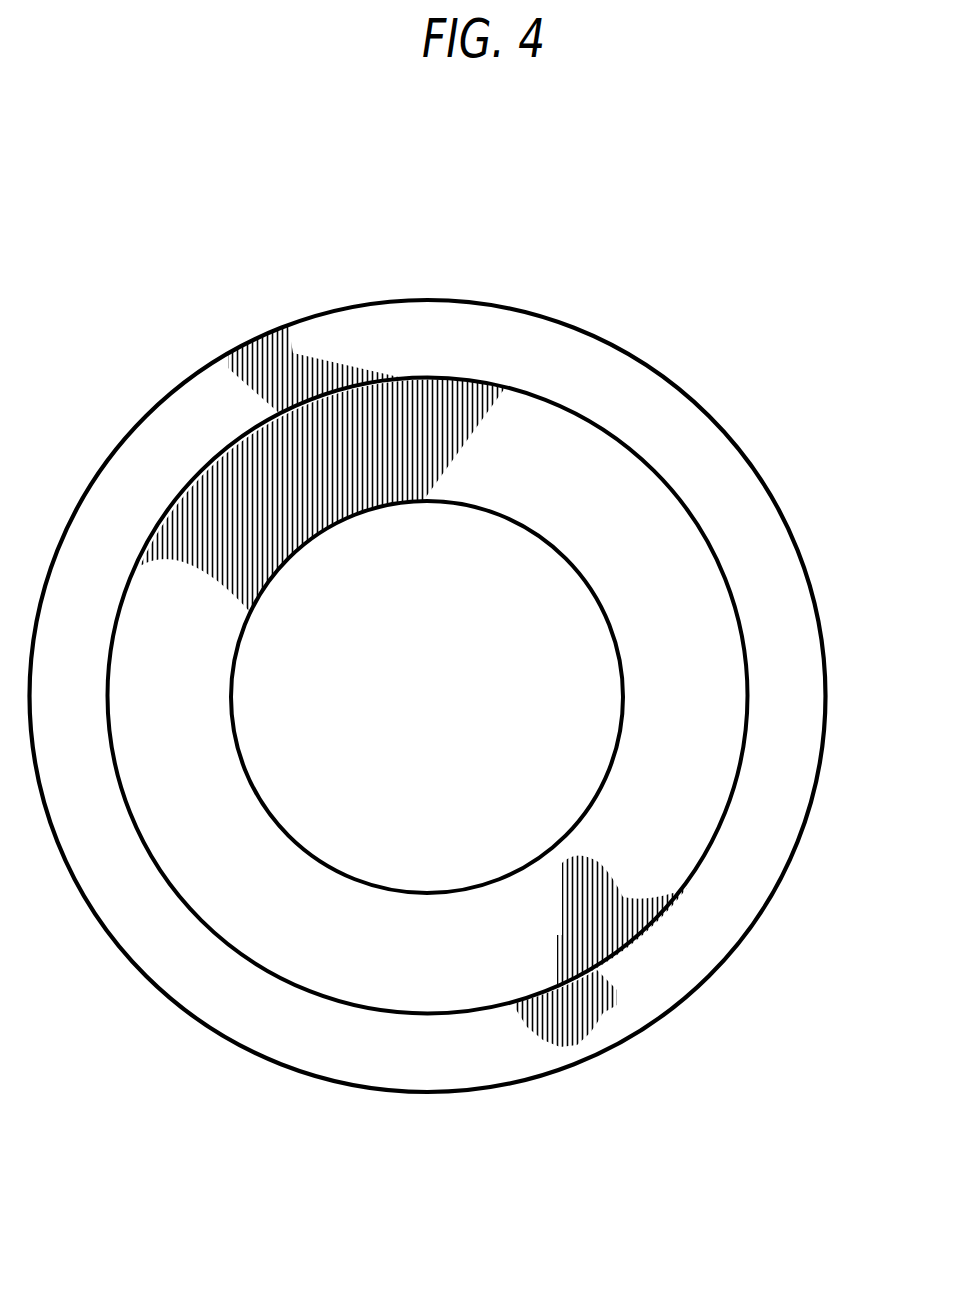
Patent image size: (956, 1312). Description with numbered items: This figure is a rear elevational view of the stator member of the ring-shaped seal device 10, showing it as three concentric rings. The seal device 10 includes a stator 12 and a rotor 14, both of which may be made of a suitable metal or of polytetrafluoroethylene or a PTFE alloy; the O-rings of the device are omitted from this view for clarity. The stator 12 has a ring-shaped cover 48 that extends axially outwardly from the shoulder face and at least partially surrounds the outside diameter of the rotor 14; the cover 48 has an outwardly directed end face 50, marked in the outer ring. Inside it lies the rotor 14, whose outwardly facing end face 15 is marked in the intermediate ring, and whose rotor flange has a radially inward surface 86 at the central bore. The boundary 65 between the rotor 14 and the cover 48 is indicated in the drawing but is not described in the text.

The seal device 10 is at (741, 385).
The stator 12 is at (793, 530).
The rotor 14 is at (262, 843).
The outwardly facing end face 15 is at (688, 680).
The cover 48 is at (503, 1090).
The outwardly directed end face 50 is at (778, 838).
The intermediate interface surface 65 is at (237, 943).
The radially inward surface 86 is at (240, 740).